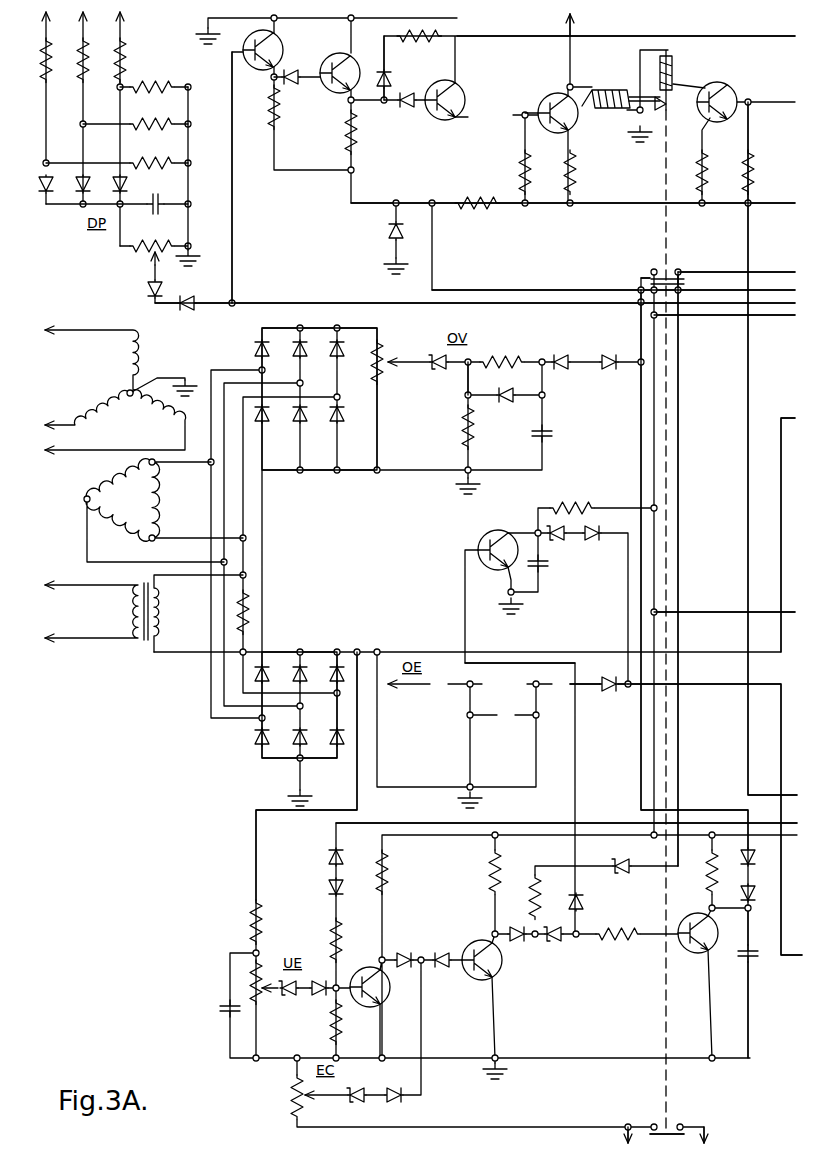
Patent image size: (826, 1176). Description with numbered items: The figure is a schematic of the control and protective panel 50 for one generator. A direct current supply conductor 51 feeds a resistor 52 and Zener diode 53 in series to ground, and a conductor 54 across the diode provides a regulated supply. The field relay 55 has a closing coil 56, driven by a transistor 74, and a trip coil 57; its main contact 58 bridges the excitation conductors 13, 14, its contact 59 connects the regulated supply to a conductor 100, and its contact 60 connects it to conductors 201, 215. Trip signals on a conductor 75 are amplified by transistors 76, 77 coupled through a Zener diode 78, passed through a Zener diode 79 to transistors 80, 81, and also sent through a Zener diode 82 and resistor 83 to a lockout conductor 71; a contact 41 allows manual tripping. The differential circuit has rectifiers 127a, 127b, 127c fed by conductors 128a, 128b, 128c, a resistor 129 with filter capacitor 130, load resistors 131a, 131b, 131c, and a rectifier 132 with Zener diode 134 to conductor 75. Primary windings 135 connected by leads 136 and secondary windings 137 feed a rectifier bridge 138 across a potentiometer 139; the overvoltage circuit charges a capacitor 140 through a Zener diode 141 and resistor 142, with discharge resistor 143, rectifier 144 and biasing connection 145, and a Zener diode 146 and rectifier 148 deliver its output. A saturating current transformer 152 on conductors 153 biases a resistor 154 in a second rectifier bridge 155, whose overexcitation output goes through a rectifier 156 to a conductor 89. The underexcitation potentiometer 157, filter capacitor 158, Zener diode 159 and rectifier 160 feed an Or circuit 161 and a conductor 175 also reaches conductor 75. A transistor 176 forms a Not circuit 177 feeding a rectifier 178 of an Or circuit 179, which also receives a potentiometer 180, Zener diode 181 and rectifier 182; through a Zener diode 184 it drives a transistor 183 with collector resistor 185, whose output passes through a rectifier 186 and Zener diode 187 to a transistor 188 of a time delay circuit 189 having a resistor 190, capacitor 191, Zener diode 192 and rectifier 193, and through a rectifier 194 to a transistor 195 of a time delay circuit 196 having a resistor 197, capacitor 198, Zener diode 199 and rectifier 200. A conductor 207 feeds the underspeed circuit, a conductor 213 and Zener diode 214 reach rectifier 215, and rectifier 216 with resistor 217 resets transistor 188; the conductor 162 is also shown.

The conductor 13 is at (710, 1134).
The conductor 14 is at (622, 1134).
The contact 41 is at (572, 24).
The control and protective panel 50 is at (278, 776).
The direct current supply conductor 51 is at (626, 202).
The resistor 52 is at (476, 208).
The Zener diode 53 is at (390, 232).
The conductor 54 is at (528, 290).
The field relay 55 is at (685, 229).
The closing coil 56 is at (676, 72).
The trip coil 57 is at (610, 90).
The main contact 58 is at (665, 1140).
The contact 59 is at (654, 272).
The contact 60 is at (685, 286).
The conductor 71 is at (734, 36).
The transistor 74 is at (730, 90).
The conductor 75 is at (232, 232).
The transistor 76 is at (280, 45).
The transistor 77 is at (326, 61).
The Zener diode 78 is at (294, 88).
The Zener diode 79 is at (405, 108).
The transistor 80 is at (433, 80).
The transistor 81 is at (553, 98).
The Zener diode 82 is at (382, 72).
The resistor 83 is at (397, 36).
The conductor 89 is at (729, 684).
The conductor 100 is at (792, 275).
The rectifier 127a is at (42, 202).
The rectifier 127b is at (80, 176).
The rectifier 127c is at (117, 176).
The conductor 128a is at (46, 130).
The conductor 128b is at (99, 75).
The conductor 128c is at (138, 75).
The resistor 129 is at (142, 252).
The filter capacitor 130 is at (155, 214).
The resistor 131a is at (140, 170).
The resistor 131b is at (140, 130).
The resistor 131c is at (159, 86).
The rectifier 132 is at (146, 286).
The Zener diode 134 is at (189, 298).
The primary windings 135 is at (126, 388).
The leads 136 is at (90, 329).
The secondary windings 137 is at (163, 510).
The three-phase rectifier bridge 138 is at (316, 411).
The potentiometer 139 is at (384, 346).
The capacitor 140 is at (556, 436).
The Zener diode 141 is at (432, 368).
The resistor 142 is at (508, 350).
The resistor 143 is at (460, 438).
The rectifier 144 is at (518, 402).
The biasing connection 145 is at (468, 382).
The Zener diode 146 is at (553, 350).
The rectifier 148 is at (596, 350).
The saturating current transformer 152 is at (140, 637).
The conductors 153 is at (108, 606).
The resistor 154 is at (250, 614).
The three-phase rectifier bridge 155 is at (302, 692).
The rectifier 156 is at (618, 682).
The potentiometer 157 is at (250, 916).
The filter capacitor 158 is at (220, 1010).
The Zener diode 159 is at (292, 996).
The rectifier 160 is at (320, 996).
The Or circuit 161 is at (320, 978).
The line 162 is at (781, 444).
The conductor 175 is at (734, 302).
The transistor 176 is at (388, 996).
The Not circuit 177 is at (366, 1023).
The rectifier 178 is at (404, 952).
The Or circuit 179 is at (419, 940).
The potentiometer 180 is at (290, 1092).
The Zener diode 181 is at (349, 1080).
The rectifier 182 is at (389, 1080).
The transistor 183 is at (498, 976).
The Zener diode 184 is at (438, 952).
The resistor 185 is at (488, 870).
The rectifier 186 is at (517, 942).
The Zener diode 187 is at (558, 939).
The transistor 188 is at (699, 964).
The time delay circuit 189 is at (728, 993).
The resistor 190 is at (710, 878).
The capacitor 191 is at (740, 950).
The Zener diode 192 is at (760, 894).
The rectifier 193 is at (755, 858).
The rectifier 194 is at (584, 902).
The transistor 195 is at (490, 536).
The time delay circuit 196 is at (585, 591).
The resistor 197 is at (566, 506).
The capacitor 198 is at (548, 566).
The Zener diode 199 is at (562, 542).
The rectifier 200 is at (596, 530).
The conductor 201 is at (792, 291).
The conductor 207 is at (689, 612).
The conductor 213 is at (449, 822).
The Zener diode 214 is at (326, 858).
The rectifier / conductor 215 is at (678, 452).
The rectifier 216 is at (616, 860).
The resistor 217 is at (535, 898).